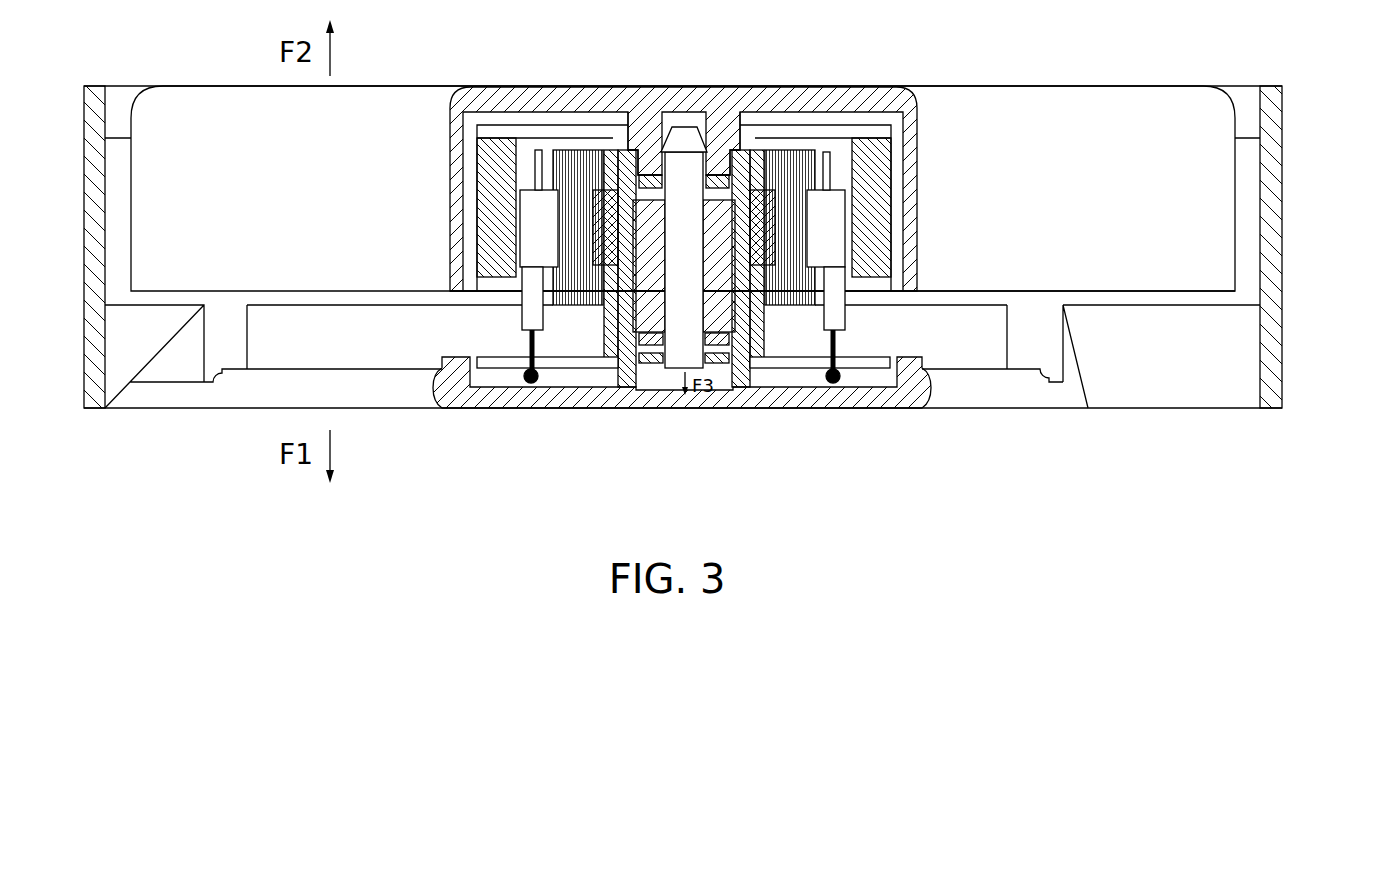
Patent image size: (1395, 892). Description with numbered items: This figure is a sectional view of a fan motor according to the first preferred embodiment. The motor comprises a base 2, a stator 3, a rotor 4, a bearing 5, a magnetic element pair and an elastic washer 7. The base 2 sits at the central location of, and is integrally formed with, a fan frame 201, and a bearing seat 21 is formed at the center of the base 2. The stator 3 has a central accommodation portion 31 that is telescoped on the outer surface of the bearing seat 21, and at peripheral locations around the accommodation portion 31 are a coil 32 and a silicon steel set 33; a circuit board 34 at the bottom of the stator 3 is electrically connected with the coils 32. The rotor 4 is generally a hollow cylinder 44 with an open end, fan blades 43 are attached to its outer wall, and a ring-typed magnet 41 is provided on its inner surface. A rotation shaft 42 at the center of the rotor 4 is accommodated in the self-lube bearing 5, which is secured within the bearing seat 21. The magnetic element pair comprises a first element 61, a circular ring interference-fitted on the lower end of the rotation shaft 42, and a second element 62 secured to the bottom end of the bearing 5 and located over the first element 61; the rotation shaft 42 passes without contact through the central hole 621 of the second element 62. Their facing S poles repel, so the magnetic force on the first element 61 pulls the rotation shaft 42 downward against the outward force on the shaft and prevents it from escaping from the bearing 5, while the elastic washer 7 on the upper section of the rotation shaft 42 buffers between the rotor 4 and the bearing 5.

The base 2 is at (526, 408).
The stator 3 is at (555, 122).
The rotor 4 is at (747, 90).
The bearing 5 is at (715, 202).
The elastic washer 7 is at (650, 168).
The bearing seat 21 is at (637, 363).
The accommodation portion 31 is at (598, 333).
The coil 32 is at (577, 147).
The silicon steel set 33 is at (530, 195).
The circuit board 34 is at (872, 363).
The ring-typed magnet 41 is at (863, 143).
The rotation shaft 42 is at (686, 127).
The fan blades 43 is at (1040, 85).
The hollow cylinder 44 is at (890, 113).
The first element 61 is at (718, 363).
The second element 62 is at (748, 357).
The central hole 621 is at (670, 343).
The fan frame 201 is at (1290, 352).